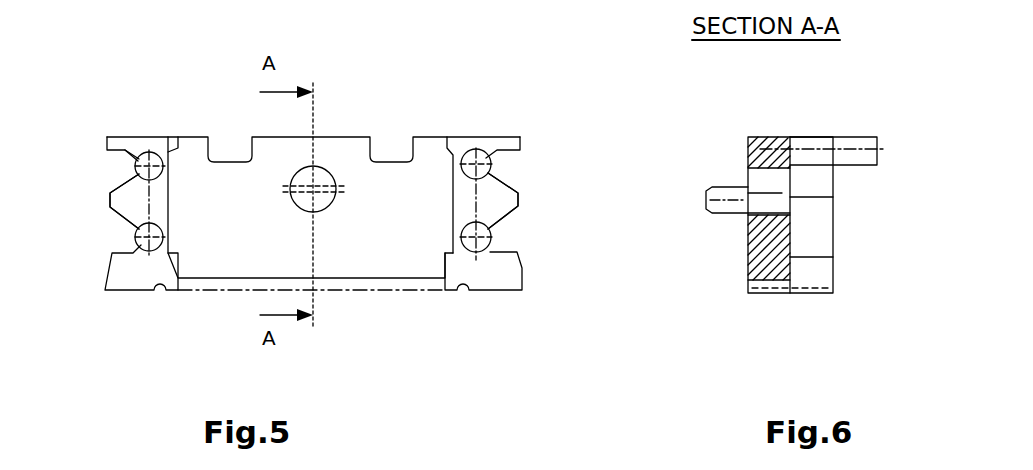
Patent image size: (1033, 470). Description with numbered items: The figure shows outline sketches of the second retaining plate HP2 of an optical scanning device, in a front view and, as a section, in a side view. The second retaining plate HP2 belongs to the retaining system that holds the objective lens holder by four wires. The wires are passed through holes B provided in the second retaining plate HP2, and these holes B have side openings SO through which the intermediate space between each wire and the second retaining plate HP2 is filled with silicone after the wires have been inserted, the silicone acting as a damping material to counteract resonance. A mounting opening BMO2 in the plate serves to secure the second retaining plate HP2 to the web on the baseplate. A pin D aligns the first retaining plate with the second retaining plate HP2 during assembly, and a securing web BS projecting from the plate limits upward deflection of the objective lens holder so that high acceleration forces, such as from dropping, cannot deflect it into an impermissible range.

In FIG. 5, the holes B is at (155, 155).
In FIG. 5, the side openings SO is at (137, 172).
In FIG. 5, the second retaining plate HP2 is at (520, 137).
In FIG. 6, the second retaining plate HP2 is at (813, 137).
In FIG. 5, the bolt mounting hole BMO2 is at (330, 209).
In FIG. 6, the pins D is at (732, 217).
In FIG. 6, the securing webs BS is at (877, 165).